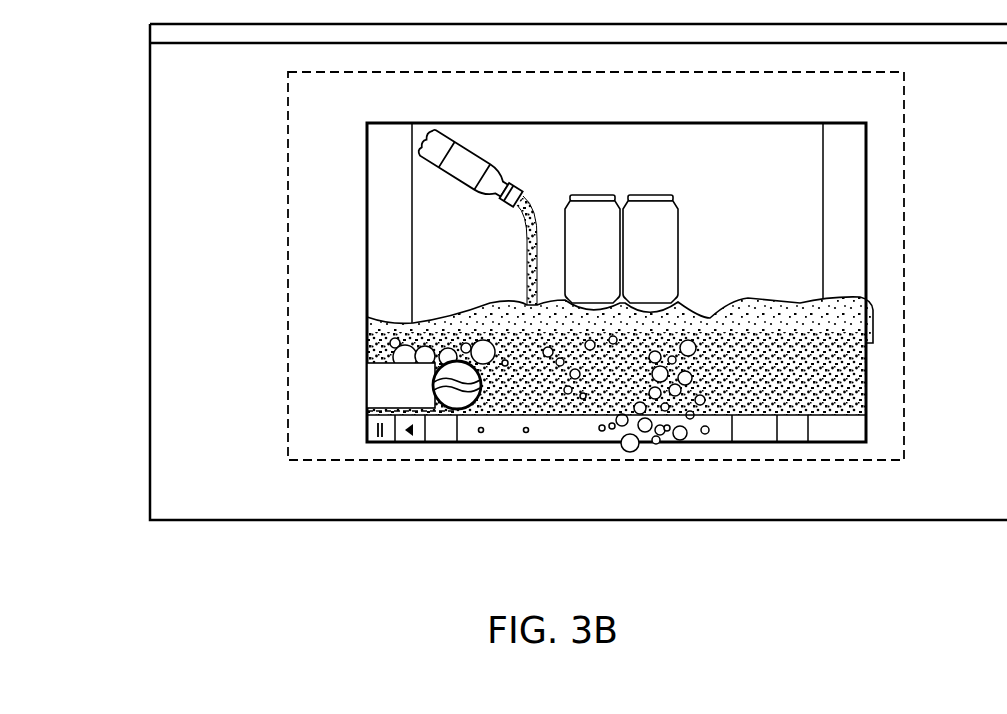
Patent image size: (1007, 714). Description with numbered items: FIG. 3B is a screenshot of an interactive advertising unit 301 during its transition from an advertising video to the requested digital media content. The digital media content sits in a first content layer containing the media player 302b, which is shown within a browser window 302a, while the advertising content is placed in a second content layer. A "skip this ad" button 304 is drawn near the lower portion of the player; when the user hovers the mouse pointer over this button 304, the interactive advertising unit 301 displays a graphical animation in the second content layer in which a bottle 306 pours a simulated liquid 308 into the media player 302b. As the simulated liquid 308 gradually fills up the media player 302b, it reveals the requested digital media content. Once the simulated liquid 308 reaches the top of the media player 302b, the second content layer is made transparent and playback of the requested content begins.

The interactive advertising unit 301 is at (288, 147).
The browser window 302a is at (150, 203).
The media player 302b is at (475, 250).
The skip this ad button 304 is at (418, 405).
The bottle 306 is at (463, 153).
The simulated liquid 308 is at (823, 381).